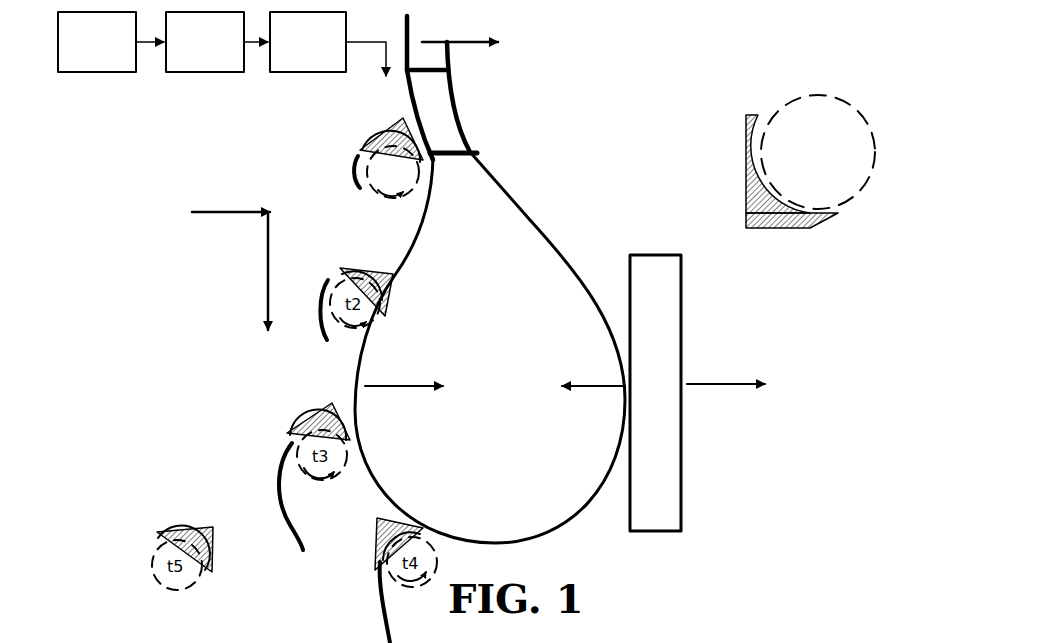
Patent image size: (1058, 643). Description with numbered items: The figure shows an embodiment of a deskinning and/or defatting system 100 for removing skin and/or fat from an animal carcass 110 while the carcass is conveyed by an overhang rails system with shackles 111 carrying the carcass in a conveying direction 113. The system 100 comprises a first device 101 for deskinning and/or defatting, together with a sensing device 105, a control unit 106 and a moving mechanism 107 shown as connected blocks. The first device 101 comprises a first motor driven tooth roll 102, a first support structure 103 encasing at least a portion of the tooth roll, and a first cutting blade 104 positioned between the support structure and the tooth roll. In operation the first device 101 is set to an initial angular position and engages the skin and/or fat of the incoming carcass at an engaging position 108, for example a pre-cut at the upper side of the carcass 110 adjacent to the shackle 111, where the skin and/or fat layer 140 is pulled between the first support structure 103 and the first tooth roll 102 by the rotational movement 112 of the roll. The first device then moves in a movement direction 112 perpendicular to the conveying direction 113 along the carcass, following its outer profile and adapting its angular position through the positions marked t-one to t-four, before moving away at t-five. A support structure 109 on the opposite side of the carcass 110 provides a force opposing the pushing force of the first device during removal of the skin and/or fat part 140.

The deskinning and/or defatting system 100 is at (147, 285).
The first device 101 is at (745, 87).
The first motor driven tooth roll 102 is at (858, 190).
The first support structure 103 is at (746, 202).
The first cutting blade 104 is at (832, 215).
The sensing device 105 is at (96, 72).
The control unit 106 is at (206, 72).
The moving mechanism 107 is at (309, 72).
The engaging position 108 is at (457, 157).
The support structure 109 is at (697, 393).
The animal carcass 110 is at (490, 347).
The shackle 111 is at (410, 27).
The rotational movement / movement direction 112 is at (266, 290).
The conveying direction 113 is at (488, 48).
The skin and/or fat layer 140 is at (356, 170).